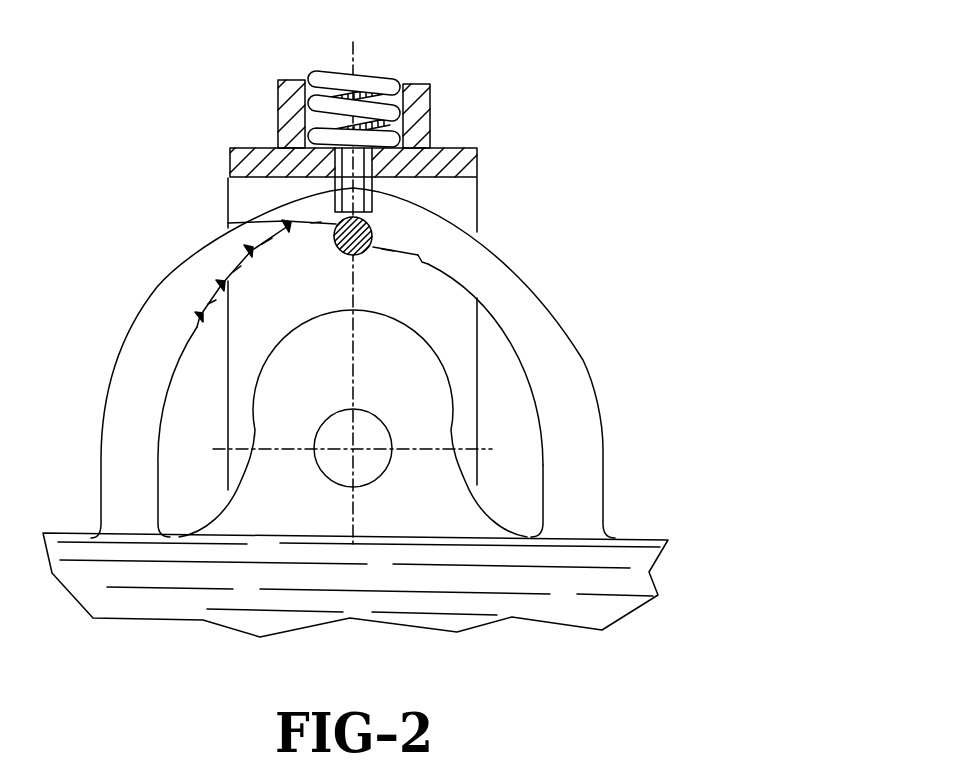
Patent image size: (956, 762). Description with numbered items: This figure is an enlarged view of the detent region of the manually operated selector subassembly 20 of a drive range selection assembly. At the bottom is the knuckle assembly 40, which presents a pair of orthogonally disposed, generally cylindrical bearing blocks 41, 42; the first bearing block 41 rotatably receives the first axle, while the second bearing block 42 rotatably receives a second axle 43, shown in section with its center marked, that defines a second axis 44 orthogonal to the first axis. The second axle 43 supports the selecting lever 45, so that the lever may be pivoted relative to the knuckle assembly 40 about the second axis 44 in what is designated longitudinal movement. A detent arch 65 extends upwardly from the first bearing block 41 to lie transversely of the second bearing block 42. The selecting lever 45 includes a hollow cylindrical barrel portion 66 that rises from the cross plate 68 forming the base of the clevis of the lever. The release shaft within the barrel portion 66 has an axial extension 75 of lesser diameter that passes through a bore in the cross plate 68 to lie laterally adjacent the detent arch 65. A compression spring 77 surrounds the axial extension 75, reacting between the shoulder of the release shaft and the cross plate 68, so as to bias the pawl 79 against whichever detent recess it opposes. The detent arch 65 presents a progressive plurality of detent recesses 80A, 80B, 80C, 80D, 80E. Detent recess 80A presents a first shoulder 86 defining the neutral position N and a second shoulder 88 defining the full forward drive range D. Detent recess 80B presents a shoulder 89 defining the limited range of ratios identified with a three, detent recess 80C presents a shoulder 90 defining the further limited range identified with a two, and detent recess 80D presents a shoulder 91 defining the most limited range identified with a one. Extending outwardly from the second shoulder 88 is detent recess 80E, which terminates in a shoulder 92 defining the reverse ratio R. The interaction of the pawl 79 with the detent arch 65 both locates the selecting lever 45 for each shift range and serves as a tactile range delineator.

The selector subassembly 20 is at (606, 193).
The knuckle assembly 40 is at (528, 636).
The first bearing block 41 is at (627, 588).
The second bearing block 42 is at (430, 477).
The second axle 43 is at (373, 462).
The second axis 44 is at (354, 446).
The selecting lever 45 is at (326, 52).
The detent arch 65 is at (555, 350).
The barrel portion 66 is at (417, 100).
The cross plate 68 is at (230, 155).
The axial extension 75 is at (357, 168).
The compression spring 77 is at (383, 110).
The pawl 79 is at (333, 220).
The detent recess 80A is at (317, 232).
The detent recess 80B is at (273, 255).
The detent recess 80C is at (242, 288).
The detent recess 80D is at (214, 318).
The detent recess 80E is at (391, 265).
The first shoulder 86 is at (375, 221).
The second shoulder 88 is at (228, 223).
The shoulder 89 is at (246, 247).
The shoulder 90 is at (218, 281).
The shoulder 91 is at (196, 313).
The shoulder 92 is at (425, 257).